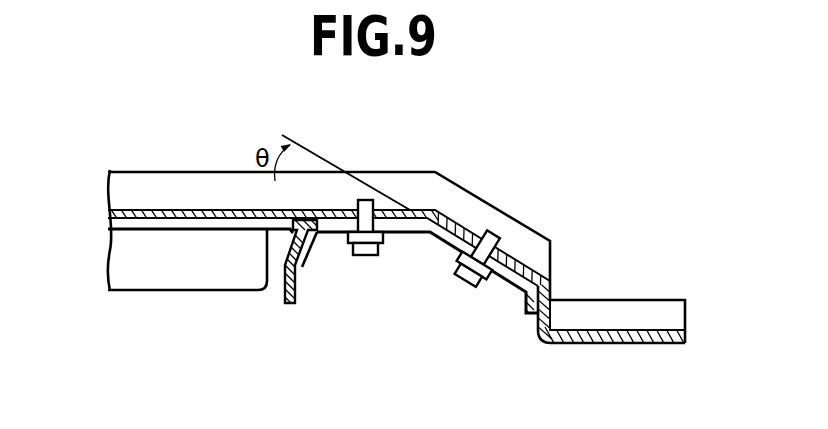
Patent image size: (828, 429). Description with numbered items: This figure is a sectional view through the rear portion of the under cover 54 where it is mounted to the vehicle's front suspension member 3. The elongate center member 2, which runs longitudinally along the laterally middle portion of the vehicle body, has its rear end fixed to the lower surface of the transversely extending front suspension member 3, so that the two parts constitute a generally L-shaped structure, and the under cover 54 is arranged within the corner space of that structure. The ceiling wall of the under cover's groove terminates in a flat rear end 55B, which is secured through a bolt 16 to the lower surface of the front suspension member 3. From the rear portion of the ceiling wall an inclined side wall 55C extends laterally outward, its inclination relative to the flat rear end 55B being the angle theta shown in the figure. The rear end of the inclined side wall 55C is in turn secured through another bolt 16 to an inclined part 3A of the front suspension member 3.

The center member 2 is at (187, 262).
The front suspension member 3 is at (402, 162).
The inclined part of the front suspension member 3A is at (458, 238).
The bolt 16 is at (364, 257).
The under cover 54 is at (313, 272).
The flat rear end of the ceiling wall 55B is at (408, 215).
The inclined side wall 55C is at (513, 258).